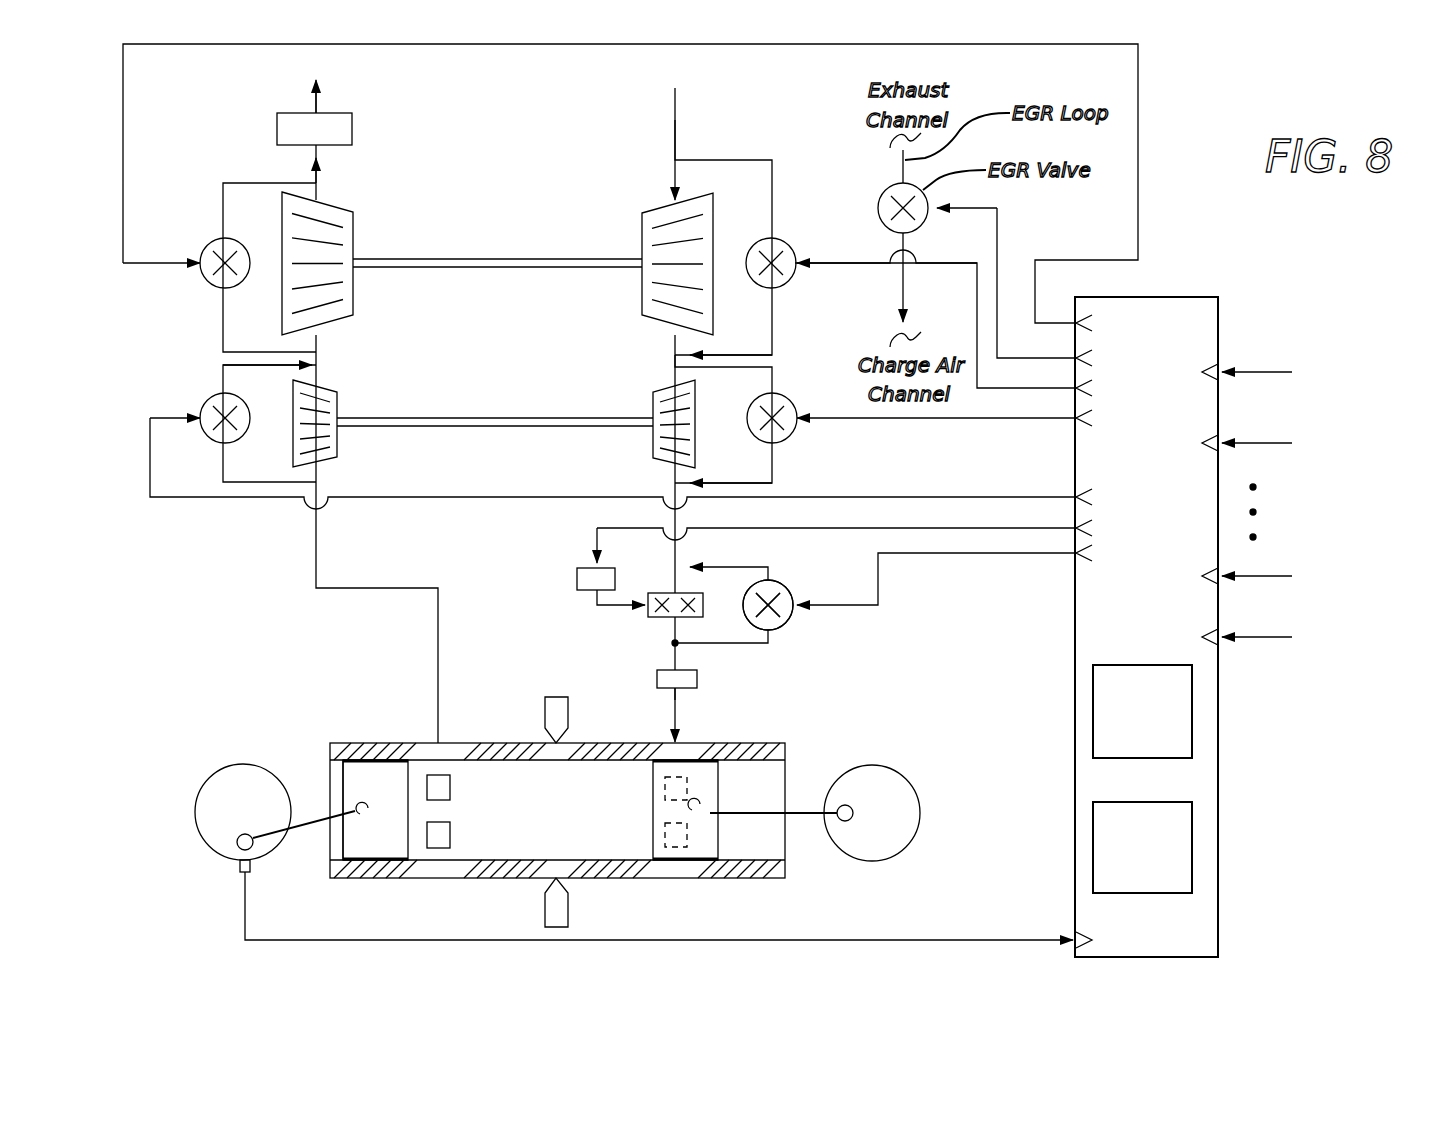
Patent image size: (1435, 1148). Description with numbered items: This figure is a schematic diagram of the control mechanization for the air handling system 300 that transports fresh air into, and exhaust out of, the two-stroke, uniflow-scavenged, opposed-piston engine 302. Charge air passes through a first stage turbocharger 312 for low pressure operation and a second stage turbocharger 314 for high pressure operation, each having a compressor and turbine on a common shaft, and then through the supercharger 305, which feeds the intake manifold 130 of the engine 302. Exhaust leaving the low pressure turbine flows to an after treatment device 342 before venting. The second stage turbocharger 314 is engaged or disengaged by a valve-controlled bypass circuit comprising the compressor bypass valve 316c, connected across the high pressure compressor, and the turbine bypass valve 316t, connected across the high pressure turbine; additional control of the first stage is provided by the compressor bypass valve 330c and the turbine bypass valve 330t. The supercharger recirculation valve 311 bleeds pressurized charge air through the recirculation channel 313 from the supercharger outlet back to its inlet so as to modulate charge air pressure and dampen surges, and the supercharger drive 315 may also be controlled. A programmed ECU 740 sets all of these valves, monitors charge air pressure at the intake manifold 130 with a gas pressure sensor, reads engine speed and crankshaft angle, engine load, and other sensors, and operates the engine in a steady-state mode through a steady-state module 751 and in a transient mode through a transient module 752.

The air handling system 300 is at (518, 147).
The after treatment device 342 is at (352, 130).
The turbine bypass valve 330t is at (206, 250).
The first stage turbocharger 312 is at (514, 262).
The compressor bypass valve 330c is at (790, 246).
The turbine bypass valve 316t is at (206, 405).
The second stage turbocharger 314 is at (512, 420).
The compressor bypass valve 316c is at (790, 436).
The supercharger drive 315 is at (577, 579).
The supercharger 305 is at (655, 620).
The recirculation channel 313 is at (737, 567).
The supercharger recirculation valve 311 is at (787, 628).
The intake manifold 130 is at (657, 680).
The opposed-piston engine 302 is at (362, 722).
The steady-state module 751 is at (1093, 710).
The transient module 752 is at (1093, 852).
The ECU 740 is at (1218, 778).